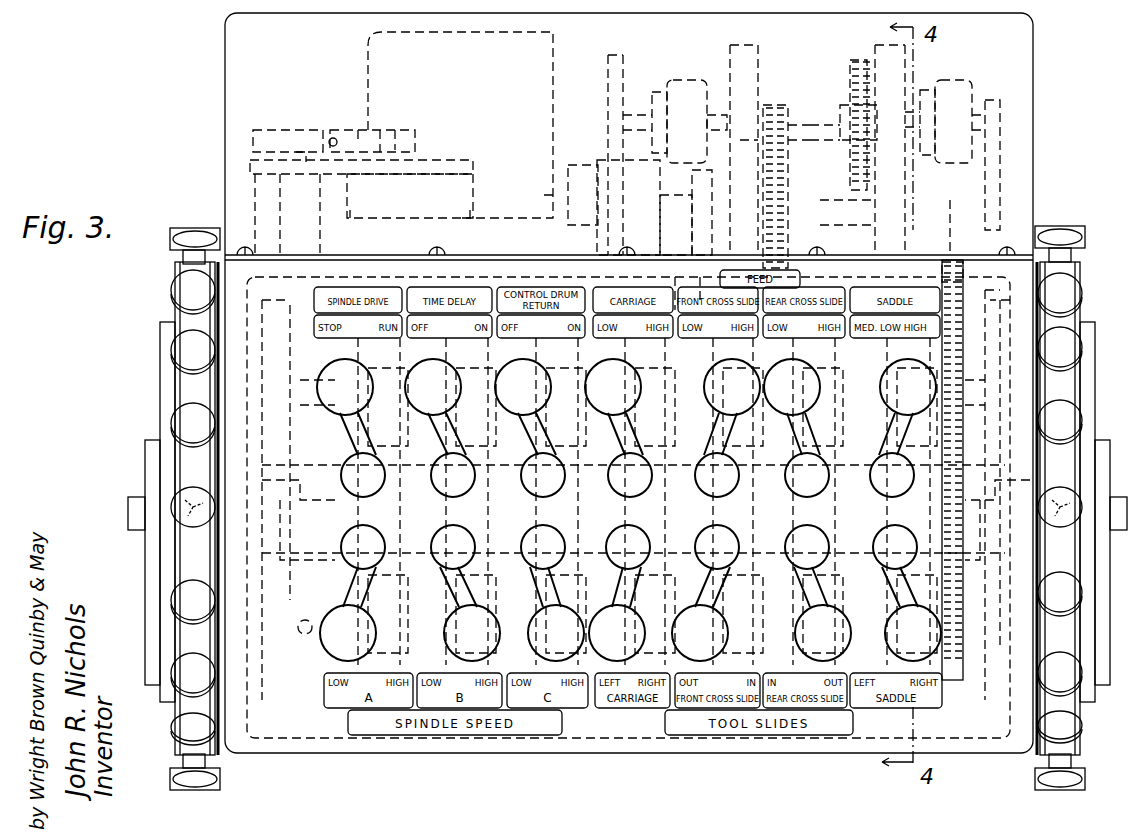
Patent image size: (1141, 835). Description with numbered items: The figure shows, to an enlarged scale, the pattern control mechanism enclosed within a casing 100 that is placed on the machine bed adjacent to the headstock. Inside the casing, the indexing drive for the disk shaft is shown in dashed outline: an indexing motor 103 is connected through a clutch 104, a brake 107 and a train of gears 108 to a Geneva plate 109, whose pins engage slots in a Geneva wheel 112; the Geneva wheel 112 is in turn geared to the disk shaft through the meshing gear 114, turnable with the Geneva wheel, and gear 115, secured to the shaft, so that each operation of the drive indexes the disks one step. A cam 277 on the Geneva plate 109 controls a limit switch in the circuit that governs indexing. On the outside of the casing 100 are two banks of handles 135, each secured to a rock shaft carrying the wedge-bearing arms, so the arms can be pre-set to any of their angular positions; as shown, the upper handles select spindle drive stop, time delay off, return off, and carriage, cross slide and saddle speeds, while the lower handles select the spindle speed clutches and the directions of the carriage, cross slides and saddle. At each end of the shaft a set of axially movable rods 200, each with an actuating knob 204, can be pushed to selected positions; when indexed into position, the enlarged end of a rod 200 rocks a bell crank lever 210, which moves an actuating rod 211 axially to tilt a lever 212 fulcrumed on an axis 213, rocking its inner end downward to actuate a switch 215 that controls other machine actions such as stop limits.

The casing 100 is at (590, 753).
The indexing motor 103 is at (548, 64).
The clutch 104 is at (682, 96).
The brake 107 is at (963, 86).
The train of gears 108 is at (785, 101).
The Geneva plate 109 is at (815, 150).
The Geneva wheel 112 is at (866, 250).
The gear 114 is at (948, 258).
The gear 115 is at (962, 440).
The handle 135 is at (420, 370).
The axially movable rod 200 is at (168, 538).
The actuating knob 204 is at (183, 420).
The bell crank lever 210 is at (262, 505).
The actuating rod 211 is at (262, 370).
The lever 212 is at (279, 130).
The axis 213 is at (338, 136).
The switch 215 is at (390, 220).
The cam 277 is at (706, 236).